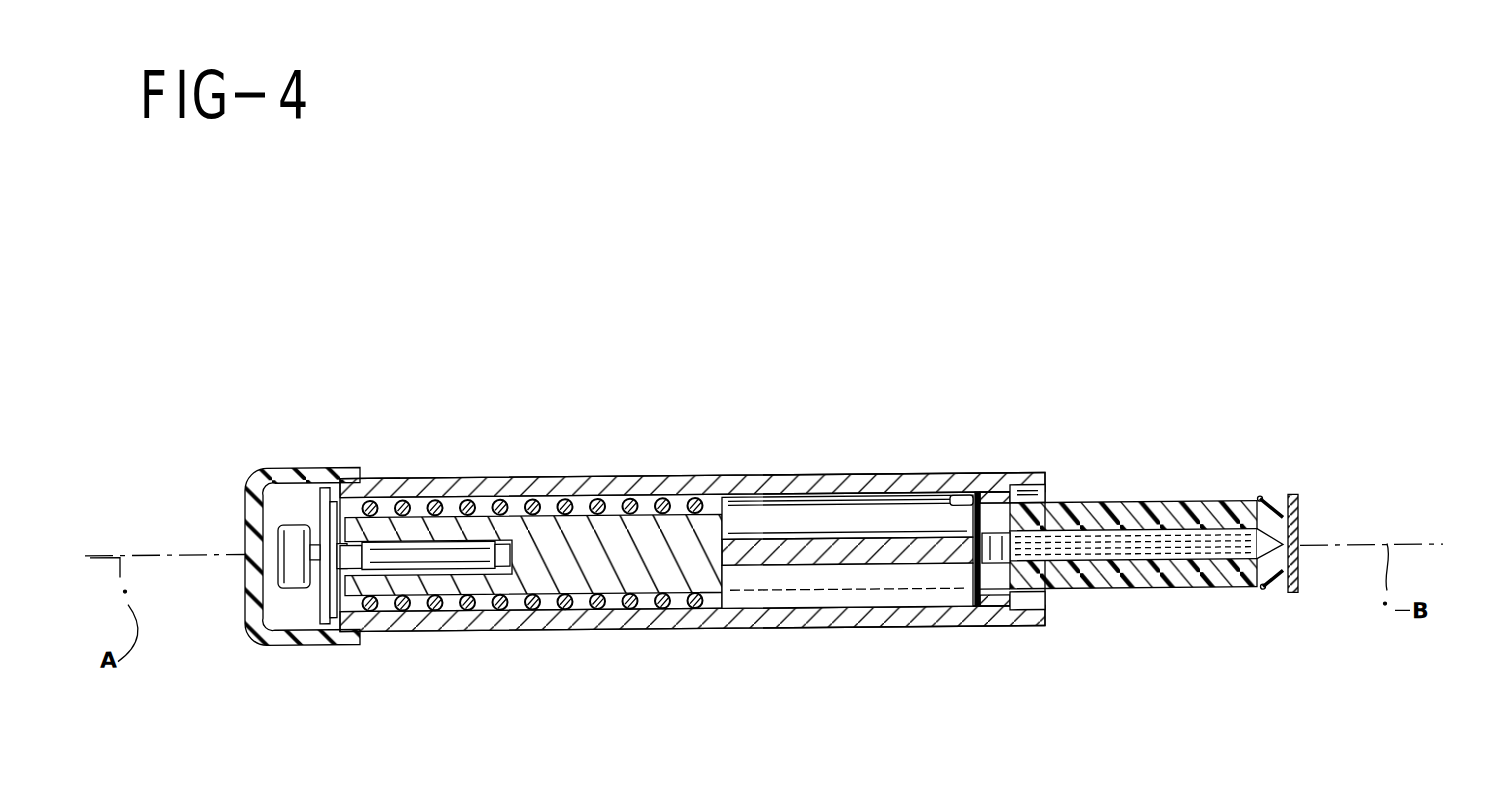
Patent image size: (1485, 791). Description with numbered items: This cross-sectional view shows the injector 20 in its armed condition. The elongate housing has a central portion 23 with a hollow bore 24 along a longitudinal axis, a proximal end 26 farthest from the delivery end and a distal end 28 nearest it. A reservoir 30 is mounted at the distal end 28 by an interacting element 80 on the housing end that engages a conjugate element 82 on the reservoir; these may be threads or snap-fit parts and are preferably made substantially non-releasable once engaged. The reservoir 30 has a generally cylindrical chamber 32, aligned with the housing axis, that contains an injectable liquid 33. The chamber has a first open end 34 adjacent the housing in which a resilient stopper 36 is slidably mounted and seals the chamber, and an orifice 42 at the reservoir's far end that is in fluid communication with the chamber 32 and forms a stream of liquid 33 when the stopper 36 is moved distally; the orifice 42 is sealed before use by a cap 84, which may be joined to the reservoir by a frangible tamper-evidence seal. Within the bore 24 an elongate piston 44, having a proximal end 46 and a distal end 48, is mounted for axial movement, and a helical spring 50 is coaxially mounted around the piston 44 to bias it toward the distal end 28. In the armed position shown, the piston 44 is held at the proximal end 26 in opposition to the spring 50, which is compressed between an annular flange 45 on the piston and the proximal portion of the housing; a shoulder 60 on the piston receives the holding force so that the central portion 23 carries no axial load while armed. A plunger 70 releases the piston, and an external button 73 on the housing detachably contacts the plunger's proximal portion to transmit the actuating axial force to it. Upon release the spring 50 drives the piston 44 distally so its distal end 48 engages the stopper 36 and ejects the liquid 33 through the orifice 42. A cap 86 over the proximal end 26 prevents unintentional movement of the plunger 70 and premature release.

The injector 20 is at (806, 272).
The central portion 23 is at (715, 477).
The hollow bore 24 is at (833, 513).
The proximal end 26 is at (373, 475).
The distal end 28 is at (1037, 474).
The reservoir 30 is at (1143, 506).
The chamber 32 is at (1233, 509).
The injectable liquid 33 is at (1202, 554).
The first open end 34 is at (943, 564).
The resilient stopper 36 is at (1012, 566).
The orifice 42 is at (1310, 510).
The piston 44 is at (650, 524).
The annular flange 45 is at (702, 602).
The proximal end 46 is at (350, 585).
The distal end 48 is at (795, 585).
The helical spring 50 is at (505, 495).
The shoulder 60 is at (338, 600).
The plunger 70 is at (428, 555).
The external button 73 is at (270, 488).
The interacting element 80 is at (967, 511).
The conjugate element 82 is at (997, 609).
The cap 84 is at (1300, 588).
The cap 86 is at (250, 495).